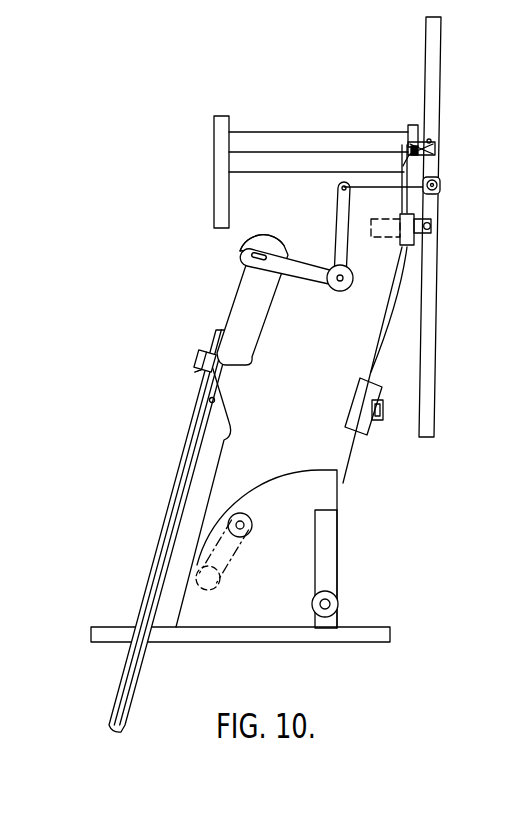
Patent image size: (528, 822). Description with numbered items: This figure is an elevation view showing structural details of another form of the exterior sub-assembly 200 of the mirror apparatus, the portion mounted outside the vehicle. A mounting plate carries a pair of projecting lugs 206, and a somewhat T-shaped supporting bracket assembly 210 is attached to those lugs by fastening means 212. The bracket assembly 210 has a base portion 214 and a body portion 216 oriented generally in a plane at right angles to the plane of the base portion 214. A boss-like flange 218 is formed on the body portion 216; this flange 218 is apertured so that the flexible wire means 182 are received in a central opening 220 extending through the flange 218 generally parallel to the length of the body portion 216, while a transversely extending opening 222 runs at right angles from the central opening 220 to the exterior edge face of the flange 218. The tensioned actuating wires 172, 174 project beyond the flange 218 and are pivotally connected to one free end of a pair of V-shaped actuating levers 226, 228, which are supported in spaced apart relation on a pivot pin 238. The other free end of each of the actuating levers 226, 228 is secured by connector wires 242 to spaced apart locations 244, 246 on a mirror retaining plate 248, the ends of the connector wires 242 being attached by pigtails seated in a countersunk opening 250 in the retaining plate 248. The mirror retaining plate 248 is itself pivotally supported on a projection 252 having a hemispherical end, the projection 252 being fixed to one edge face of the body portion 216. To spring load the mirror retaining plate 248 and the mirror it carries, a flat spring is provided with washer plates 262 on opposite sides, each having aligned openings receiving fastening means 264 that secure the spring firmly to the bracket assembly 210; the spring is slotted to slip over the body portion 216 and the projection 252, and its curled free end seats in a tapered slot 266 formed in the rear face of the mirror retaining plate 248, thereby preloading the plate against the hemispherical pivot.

The tensioned actuating wire 172 is at (234, 300).
The tensioned actuating wire 174 is at (234, 300).
The flexible wire means 182 is at (189, 470).
The exterior sub-assembly 200 is at (150, 523).
The projecting lug 206 is at (337, 641).
The supporting bracket assembly 210 is at (322, 435).
The fastening means 212 is at (245, 532).
The base portion 214 is at (322, 576).
The body portion 216 is at (321, 398).
The boss-like flange 218 is at (205, 398).
The central opening 220 is at (214, 403).
The transversely extending opening 222 is at (203, 372).
The V-shaped actuating lever 226 is at (313, 270).
The V-shaped actuating lever 228 is at (311, 292).
The pivot pin 238 is at (334, 260).
The connector wire 242 is at (386, 188).
The spaced apart location 244 is at (432, 143).
The spaced apart location 246 is at (432, 143).
The mirror retaining plate 248 is at (430, 52).
The countersunk opening 250 is at (437, 186).
The projection 252 is at (431, 230).
The washer plate 262 is at (361, 426).
The fastening means 264 is at (383, 408).
The tapered slot 266 is at (430, 141).